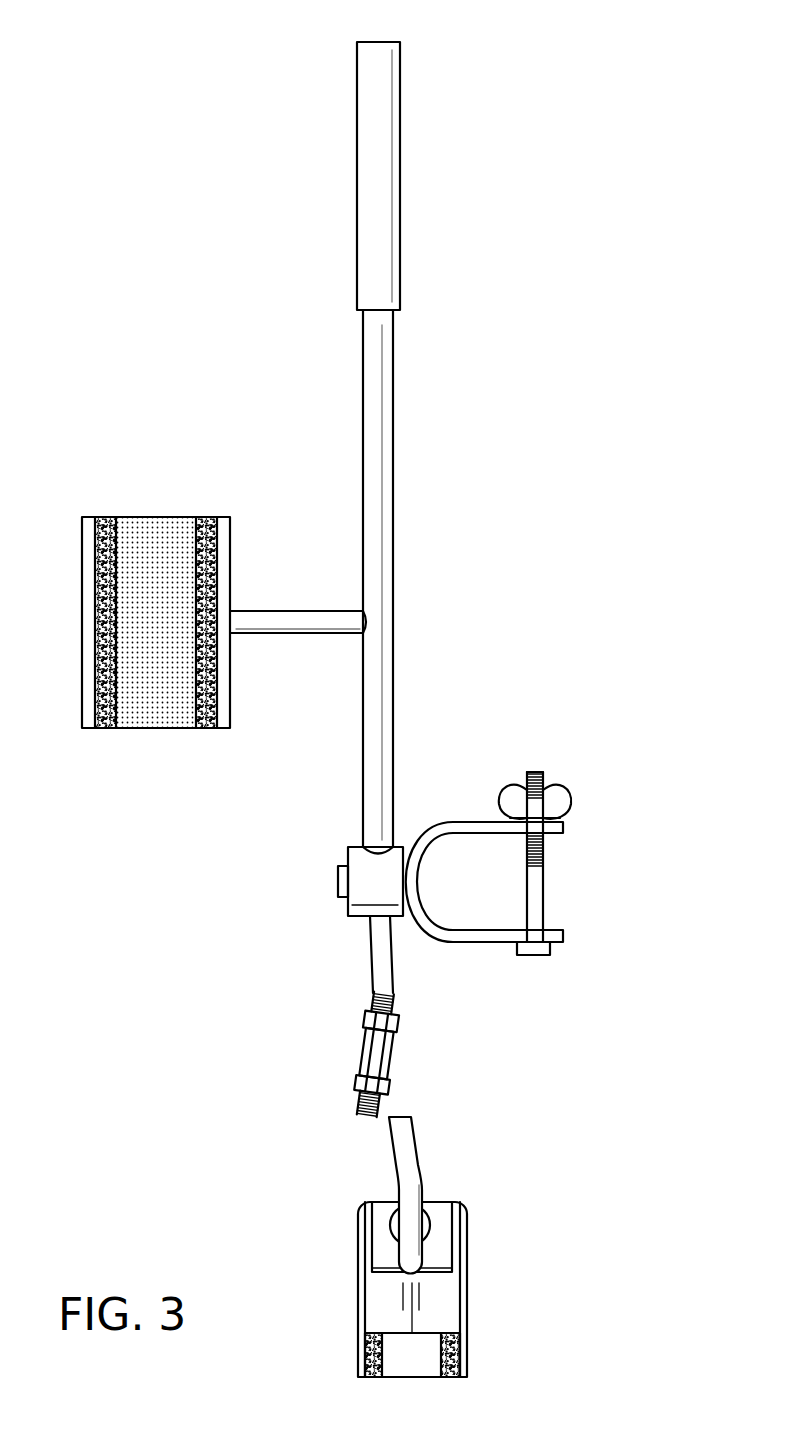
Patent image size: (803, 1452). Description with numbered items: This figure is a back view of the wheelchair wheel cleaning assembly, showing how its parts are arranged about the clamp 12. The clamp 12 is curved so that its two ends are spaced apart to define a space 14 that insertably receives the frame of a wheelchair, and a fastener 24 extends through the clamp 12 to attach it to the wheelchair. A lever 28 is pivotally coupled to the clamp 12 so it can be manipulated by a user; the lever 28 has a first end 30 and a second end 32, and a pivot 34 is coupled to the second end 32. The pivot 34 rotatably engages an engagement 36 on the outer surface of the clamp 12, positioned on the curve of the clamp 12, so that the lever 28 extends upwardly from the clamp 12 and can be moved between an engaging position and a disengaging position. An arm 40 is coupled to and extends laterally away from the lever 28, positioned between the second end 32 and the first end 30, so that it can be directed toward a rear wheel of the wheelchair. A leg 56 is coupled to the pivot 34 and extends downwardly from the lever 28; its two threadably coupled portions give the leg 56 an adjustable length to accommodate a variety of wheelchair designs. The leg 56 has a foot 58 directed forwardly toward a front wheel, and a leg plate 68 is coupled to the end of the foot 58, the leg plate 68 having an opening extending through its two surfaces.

The clamp 12 is at (457, 825).
The space 14 is at (468, 875).
The fastener 24 is at (533, 772).
The lever 28 is at (390, 502).
The first end of the lever 30 is at (378, 42).
The second end of the lever 32 is at (367, 862).
The pivot 34 is at (367, 888).
The engagement 36 is at (337, 882).
The arm 40 is at (313, 615).
The leg 56 is at (367, 972).
The foot 58 is at (410, 1222).
The leg plate 68 is at (382, 1200).